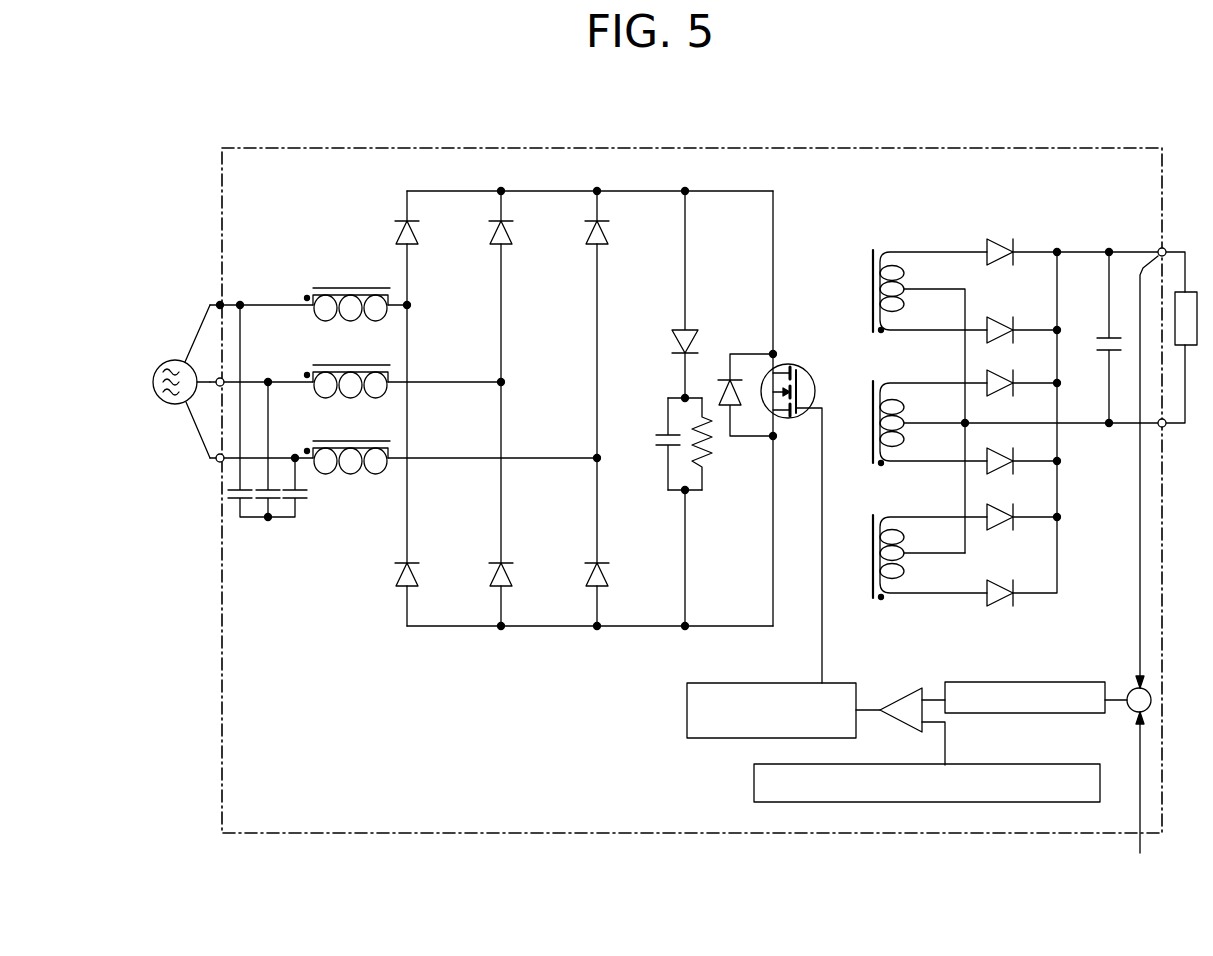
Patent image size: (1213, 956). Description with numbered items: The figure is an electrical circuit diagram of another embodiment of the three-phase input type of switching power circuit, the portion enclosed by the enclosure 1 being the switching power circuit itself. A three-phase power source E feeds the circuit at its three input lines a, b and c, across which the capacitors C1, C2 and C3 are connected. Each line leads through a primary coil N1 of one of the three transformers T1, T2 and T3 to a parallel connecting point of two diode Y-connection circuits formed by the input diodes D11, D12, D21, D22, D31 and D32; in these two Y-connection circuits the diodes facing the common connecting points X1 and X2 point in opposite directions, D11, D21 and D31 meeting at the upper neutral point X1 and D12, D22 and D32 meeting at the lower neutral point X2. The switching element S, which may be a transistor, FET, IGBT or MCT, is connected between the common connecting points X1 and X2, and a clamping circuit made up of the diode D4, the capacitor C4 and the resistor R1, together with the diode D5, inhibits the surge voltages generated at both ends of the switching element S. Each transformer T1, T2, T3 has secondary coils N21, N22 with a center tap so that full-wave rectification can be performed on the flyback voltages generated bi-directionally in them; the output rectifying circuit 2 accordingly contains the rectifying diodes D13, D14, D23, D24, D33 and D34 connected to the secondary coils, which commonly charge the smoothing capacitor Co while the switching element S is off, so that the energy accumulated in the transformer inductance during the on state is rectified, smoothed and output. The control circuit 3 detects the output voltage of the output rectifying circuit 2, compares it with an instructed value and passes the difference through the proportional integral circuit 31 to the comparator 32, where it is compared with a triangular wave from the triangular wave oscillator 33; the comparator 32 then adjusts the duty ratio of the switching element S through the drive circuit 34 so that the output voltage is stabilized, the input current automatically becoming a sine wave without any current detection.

The 3-phase input type of switching power circuit 1 is at (722, 147).
The output rectifying circuit 2 is at (1079, 203).
The control circuit 3 is at (1077, 650).
The proportional integral circuit 31 is at (947, 682).
The comparator 32 is at (905, 693).
The triangular wave oscillator 33 is at (753, 791).
The drive circuit 34 is at (686, 724).
The 3-phase power source E is at (168, 420).
The input terminal a is at (211, 304).
The input terminal b is at (211, 381).
The input terminal c is at (214, 462).
The capacitor C1 is at (232, 496).
The capacitor C2 is at (270, 504).
The capacitor C3 is at (302, 496).
The transformer T1 is at (348, 291).
The transformer T2 is at (348, 368).
The transformer T3 is at (348, 444).
The primary winding N1 is at (333, 317).
The secondary coil N21 is at (905, 302).
The secondary coil N22 is at (905, 272).
The input diode D11 is at (420, 235).
The input diode D21 is at (514, 235).
The input diode D31 is at (610, 235).
The input diode D12 is at (420, 577).
The input diode D22 is at (514, 577).
The input diode D32 is at (610, 577).
The diode D4 is at (670, 340).
The diode D5 is at (717, 380).
The capacitor C4 is at (659, 447).
The resistor R1 is at (714, 452).
The switching element S is at (804, 364).
The common connecting point X1 is at (578, 190).
The common connecting point X2 is at (470, 627).
The rectifying diode D13 is at (1003, 248).
The output rectifier diode D14 is at (1003, 326).
The rectifying diode D23 is at (1003, 379).
The output rectifier diode D24 is at (1003, 464).
The rectifying diode D33 is at (1003, 520).
The output rectifier diode D34 is at (1003, 596).
The smoothing capacitor Co is at (1099, 358).